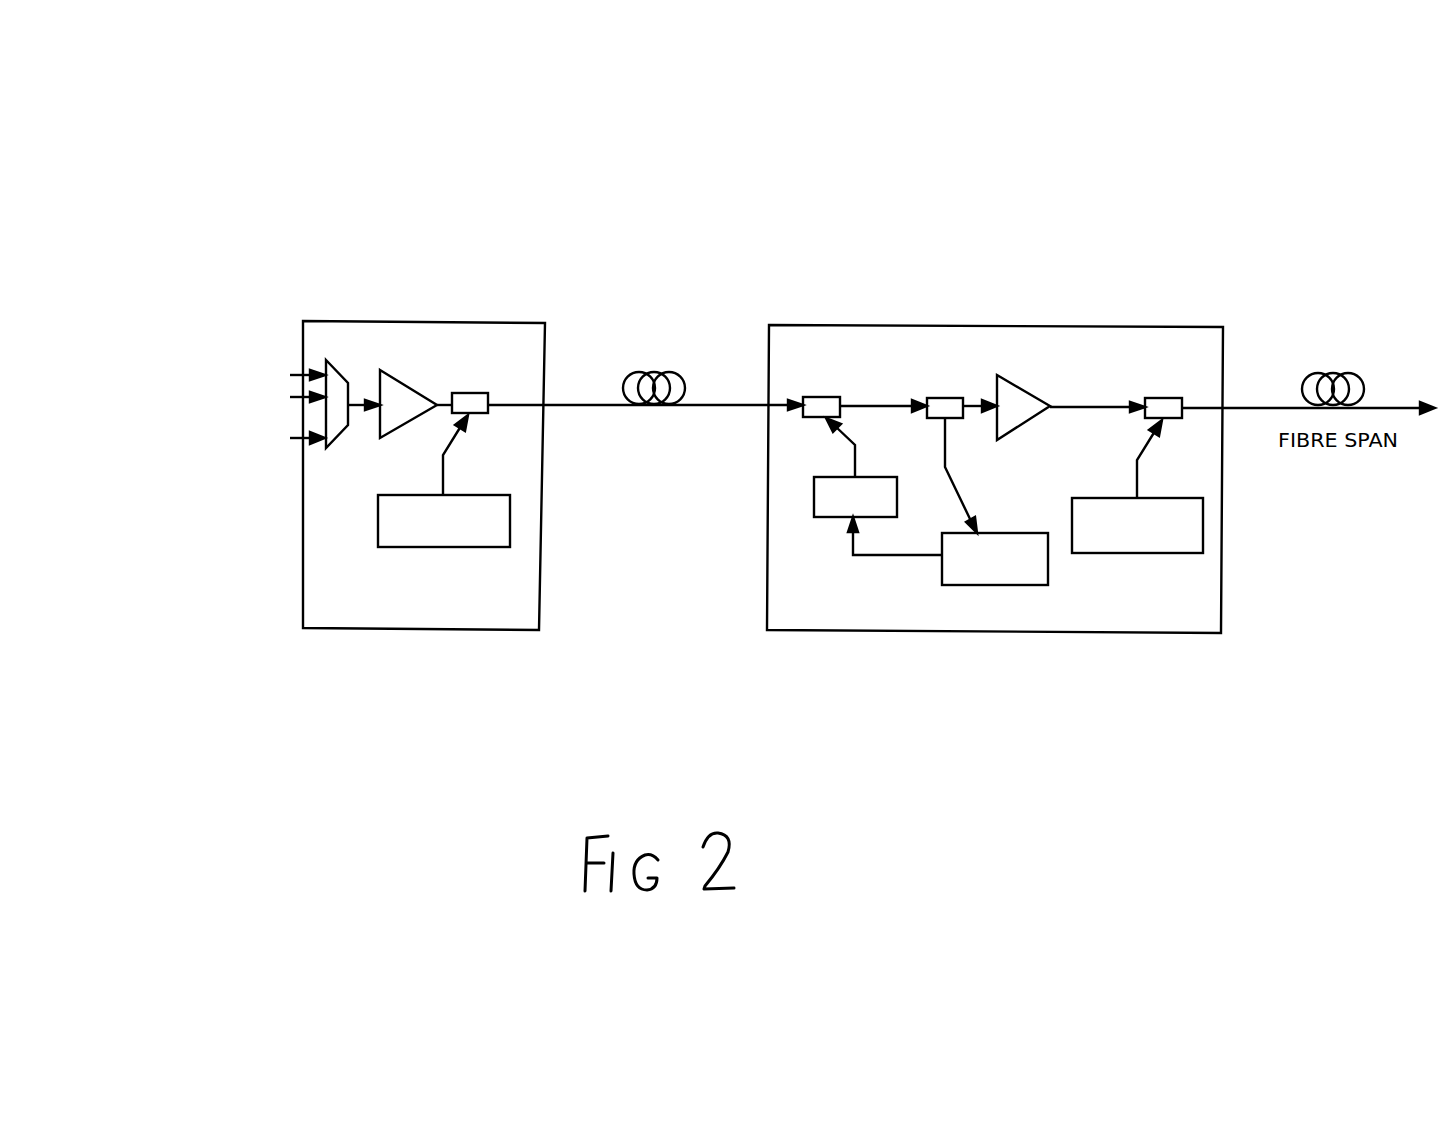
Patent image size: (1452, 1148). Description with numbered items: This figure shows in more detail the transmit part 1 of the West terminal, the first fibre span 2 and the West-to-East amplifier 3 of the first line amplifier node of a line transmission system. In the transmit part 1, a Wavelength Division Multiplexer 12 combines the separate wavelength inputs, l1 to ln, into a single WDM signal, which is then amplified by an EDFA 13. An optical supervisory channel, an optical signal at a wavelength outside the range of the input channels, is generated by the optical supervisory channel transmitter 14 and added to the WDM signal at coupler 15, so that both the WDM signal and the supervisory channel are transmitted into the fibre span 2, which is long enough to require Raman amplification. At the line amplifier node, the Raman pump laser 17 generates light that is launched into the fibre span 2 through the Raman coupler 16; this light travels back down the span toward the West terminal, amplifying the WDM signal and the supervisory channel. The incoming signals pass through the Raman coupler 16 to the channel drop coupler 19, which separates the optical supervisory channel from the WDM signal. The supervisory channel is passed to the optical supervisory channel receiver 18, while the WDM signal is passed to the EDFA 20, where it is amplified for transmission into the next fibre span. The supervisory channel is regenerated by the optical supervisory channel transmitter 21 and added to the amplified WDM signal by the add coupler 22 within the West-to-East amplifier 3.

The transmit part 1 is at (405, 442).
The first fibre span 2 is at (631, 345).
The West-to-East amplifier 3 is at (1011, 447).
The Wavelength Division Multiplexer 12 is at (324, 463).
The EDFA 13 is at (399, 445).
The optical supervisory channel transmitter 14 is at (448, 562).
The coupler 15 is at (494, 436).
The Raman coupler 16 is at (799, 436).
The Raman pump laser 17 is at (832, 530).
The optical supervisory channel receiver 18 is at (959, 598).
The channel drop coupler 19 is at (960, 379).
The EDFA 20 is at (1046, 379).
The optical supervisory channel transmitter 21 is at (1116, 566).
The add coupler 22 is at (1175, 381).